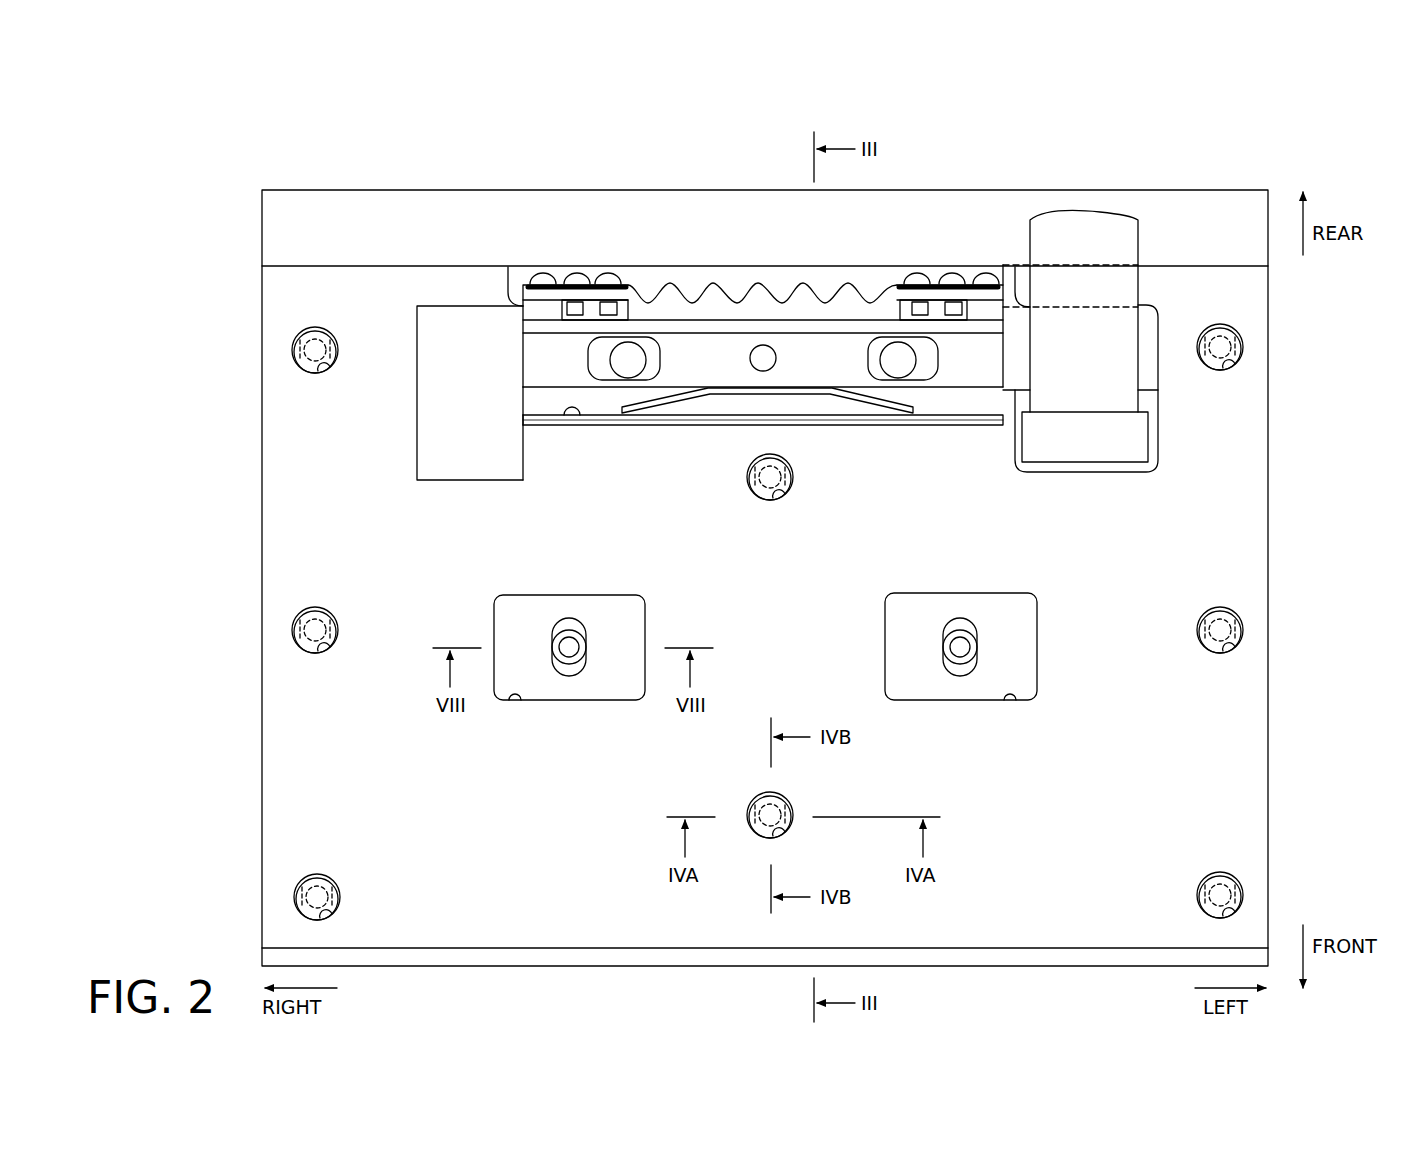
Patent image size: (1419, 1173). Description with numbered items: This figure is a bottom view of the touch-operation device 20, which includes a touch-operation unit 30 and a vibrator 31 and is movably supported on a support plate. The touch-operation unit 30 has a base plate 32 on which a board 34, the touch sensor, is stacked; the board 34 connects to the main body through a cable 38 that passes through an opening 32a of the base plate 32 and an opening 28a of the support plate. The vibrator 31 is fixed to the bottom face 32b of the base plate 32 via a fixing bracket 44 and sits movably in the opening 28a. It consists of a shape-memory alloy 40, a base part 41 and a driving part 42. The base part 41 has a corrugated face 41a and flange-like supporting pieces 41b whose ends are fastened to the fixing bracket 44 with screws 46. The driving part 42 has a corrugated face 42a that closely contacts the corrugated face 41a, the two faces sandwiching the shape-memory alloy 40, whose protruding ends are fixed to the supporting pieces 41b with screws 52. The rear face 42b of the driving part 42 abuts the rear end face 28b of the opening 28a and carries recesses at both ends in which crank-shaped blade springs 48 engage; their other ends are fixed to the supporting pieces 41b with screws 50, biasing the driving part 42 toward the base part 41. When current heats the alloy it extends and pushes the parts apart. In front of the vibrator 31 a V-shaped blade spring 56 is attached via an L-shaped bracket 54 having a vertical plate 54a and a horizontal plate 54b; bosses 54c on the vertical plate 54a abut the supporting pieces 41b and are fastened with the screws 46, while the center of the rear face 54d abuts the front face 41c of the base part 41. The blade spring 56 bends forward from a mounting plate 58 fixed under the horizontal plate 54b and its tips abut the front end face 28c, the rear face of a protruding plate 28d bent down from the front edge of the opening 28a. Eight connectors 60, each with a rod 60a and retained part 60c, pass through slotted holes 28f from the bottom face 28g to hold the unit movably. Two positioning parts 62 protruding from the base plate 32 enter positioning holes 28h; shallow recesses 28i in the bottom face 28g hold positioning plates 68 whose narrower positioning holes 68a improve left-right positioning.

The touch-operation device 20 is at (725, 560).
The opening of the support plate 28a is at (973, 397).
The rear end face of the opening 28b is at (868, 282).
The front end face of the opening 28c is at (575, 418).
The protruding plate 28d is at (604, 427).
The hole of the support plate 28f is at (323, 373).
The bottom face of the support plate 28g is at (282, 768).
The positioning hole of the support plate 28h is at (818, 614).
The recess of the support plate 28i is at (515, 704).
The touch-operation unit 30 is at (300, 550).
The vibrator 31 is at (668, 147).
The base plate 32 is at (1160, 305).
The opening of the base plate 32a is at (1160, 395).
The bottom face of the base plate 32b is at (432, 357).
The board 34 is at (1159, 440).
The cable 38 is at (1087, 404).
The shape-memory alloy 40 is at (733, 282).
The base part 41 is at (668, 292).
The corrugated face of the base part 41a is at (780, 287).
The supporting piece 41b is at (574, 316).
The front face of the base part 41c is at (783, 305).
The driving part 42 is at (760, 274).
The corrugated face of the driving part 42a is at (711, 301).
The rear face of the driving part 42b is at (836, 280).
The fixing bracket 44 is at (495, 297).
The screw 46 is at (543, 272).
The blade spring 48 is at (623, 283).
The screw 50 is at (577, 272).
The screw 52 is at (608, 272).
The bracket 54 is at (521, 363).
The vertical plate 54a is at (533, 327).
The horizontal plate 54b is at (530, 414).
The boss 54c is at (508, 296).
The rear face of the vertical plate 54d is at (818, 312).
The blade spring 56 is at (690, 400).
The mounting plate 58 is at (655, 372).
The connector 60 is at (290, 352).
The rod 60a is at (305, 330).
The retained part 60c is at (318, 373).
The positioning part 62 is at (573, 673).
The positioning plate 68 is at (638, 622).
The positioning hole of the positioning plate 68a is at (564, 631).